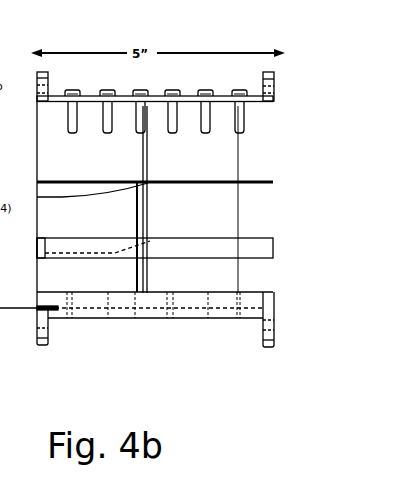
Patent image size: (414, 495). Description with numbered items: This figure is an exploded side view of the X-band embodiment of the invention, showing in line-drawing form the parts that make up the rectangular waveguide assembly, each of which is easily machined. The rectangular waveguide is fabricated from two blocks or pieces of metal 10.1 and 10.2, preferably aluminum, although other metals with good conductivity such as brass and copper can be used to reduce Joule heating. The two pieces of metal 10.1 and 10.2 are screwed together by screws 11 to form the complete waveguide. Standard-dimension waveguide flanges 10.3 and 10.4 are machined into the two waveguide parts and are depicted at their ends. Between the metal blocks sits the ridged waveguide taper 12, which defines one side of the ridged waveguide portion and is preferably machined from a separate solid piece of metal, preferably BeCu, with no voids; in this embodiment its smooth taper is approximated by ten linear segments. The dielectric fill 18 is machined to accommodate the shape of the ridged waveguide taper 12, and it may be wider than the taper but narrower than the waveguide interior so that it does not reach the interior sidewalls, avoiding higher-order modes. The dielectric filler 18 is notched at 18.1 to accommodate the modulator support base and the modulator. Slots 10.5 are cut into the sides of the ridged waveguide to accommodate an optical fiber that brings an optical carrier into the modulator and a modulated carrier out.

The metal block 10.1 is at (258, 103).
The metal block 10.2 is at (212, 313).
The waveguide flange 10.3 is at (75, 350).
The waveguide flange 10.4 is at (274, 328).
The slot 10.5 is at (58, 317).
The screw 11 is at (68, 110).
The ridged waveguide taper 12 is at (90, 180).
The dielectric fill 18 is at (276, 249).
The notch 18.1 is at (42, 258).